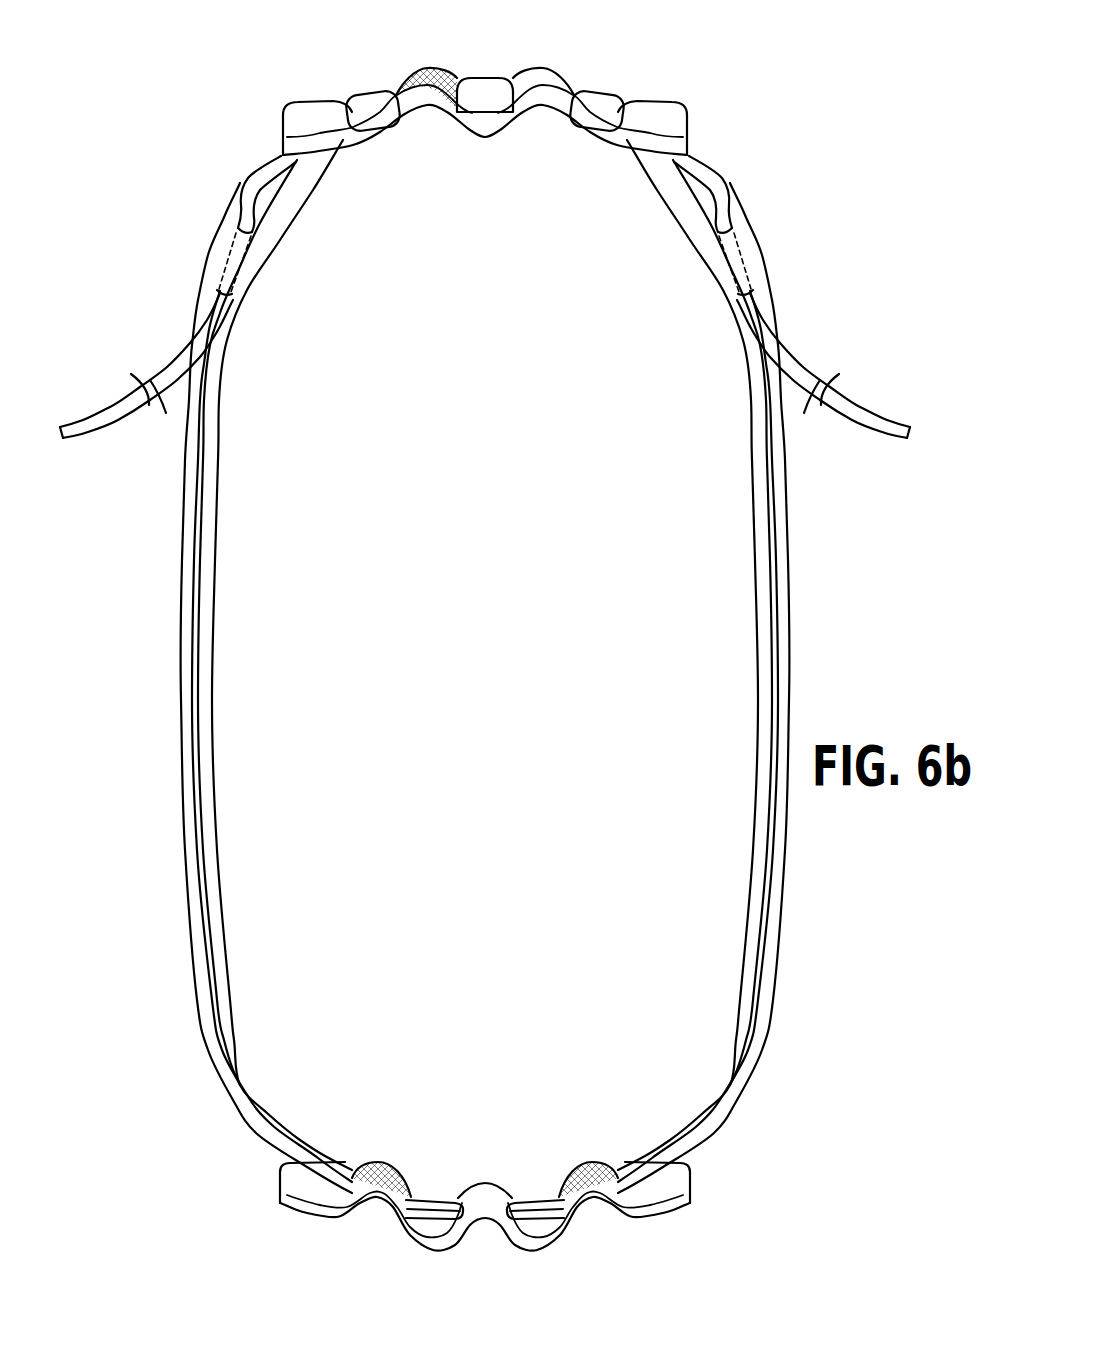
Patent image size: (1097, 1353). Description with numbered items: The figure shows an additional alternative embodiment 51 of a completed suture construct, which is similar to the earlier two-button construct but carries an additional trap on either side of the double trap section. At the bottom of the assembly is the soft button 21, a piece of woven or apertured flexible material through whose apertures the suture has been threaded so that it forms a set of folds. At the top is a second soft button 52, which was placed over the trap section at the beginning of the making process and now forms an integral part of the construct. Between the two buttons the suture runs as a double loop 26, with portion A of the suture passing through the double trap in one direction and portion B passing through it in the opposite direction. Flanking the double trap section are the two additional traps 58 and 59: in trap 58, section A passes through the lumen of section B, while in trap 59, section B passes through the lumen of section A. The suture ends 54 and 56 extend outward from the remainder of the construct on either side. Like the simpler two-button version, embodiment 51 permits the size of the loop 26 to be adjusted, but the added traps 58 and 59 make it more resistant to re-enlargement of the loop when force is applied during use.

The soft button 21 is at (695, 1180).
The double loop 26 is at (795, 556).
The additional alternative embodiment 51 is at (632, 72).
The second soft button 52 is at (308, 104).
The suture end 54 is at (884, 410).
The suture end 56 is at (88, 410).
The trap 58 is at (750, 258).
The trap 59 is at (222, 258).
The portion A of suture A is at (233, 306).
The portion B of suture B is at (680, 205).